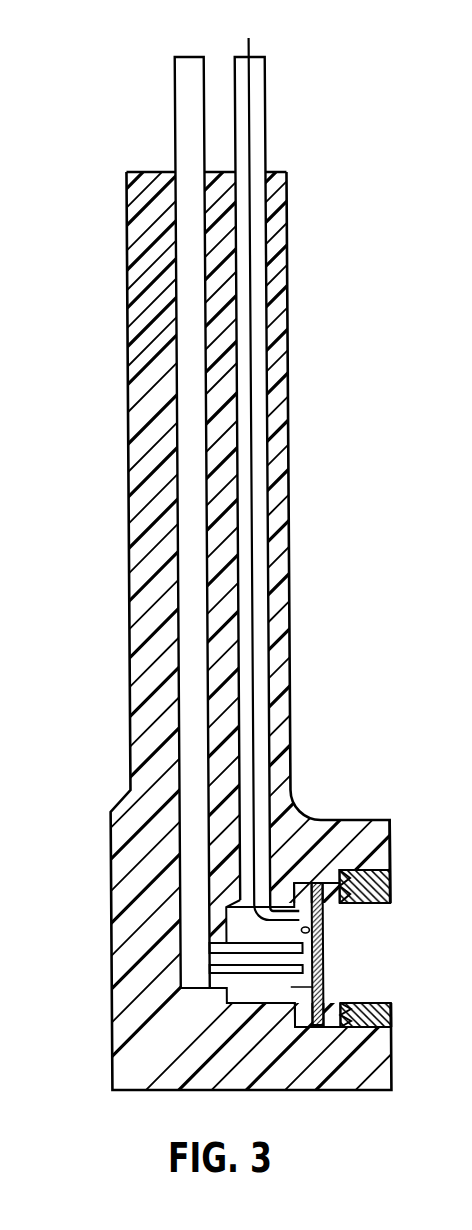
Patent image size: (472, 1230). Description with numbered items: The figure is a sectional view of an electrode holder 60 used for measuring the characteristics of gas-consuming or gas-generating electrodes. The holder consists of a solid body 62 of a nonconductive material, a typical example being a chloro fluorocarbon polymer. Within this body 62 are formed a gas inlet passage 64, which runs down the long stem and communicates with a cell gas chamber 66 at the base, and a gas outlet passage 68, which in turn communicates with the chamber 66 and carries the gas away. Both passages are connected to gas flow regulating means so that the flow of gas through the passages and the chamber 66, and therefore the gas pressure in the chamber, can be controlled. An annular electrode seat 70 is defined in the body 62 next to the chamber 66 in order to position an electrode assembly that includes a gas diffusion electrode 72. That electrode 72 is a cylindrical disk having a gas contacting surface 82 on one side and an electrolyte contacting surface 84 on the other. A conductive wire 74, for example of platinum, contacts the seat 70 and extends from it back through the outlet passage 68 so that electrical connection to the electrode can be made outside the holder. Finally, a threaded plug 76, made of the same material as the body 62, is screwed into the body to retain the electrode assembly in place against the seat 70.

The electrode holder 60 is at (86, 449).
The solid body 62 is at (125, 607).
The gas inlet passage 64 is at (181, 261).
The cell gas chamber 66 is at (320, 987).
The gas outlet passage 68 is at (257, 155).
The annular electrode seat 70 is at (332, 908).
The gas diffusion electrode 72 is at (320, 957).
The conductive wire 74 is at (249, 110).
The threaded plug 76 is at (385, 877).
The gas contacting surface 82 is at (320, 932).
The electrolyte contacting surface 84 is at (320, 972).